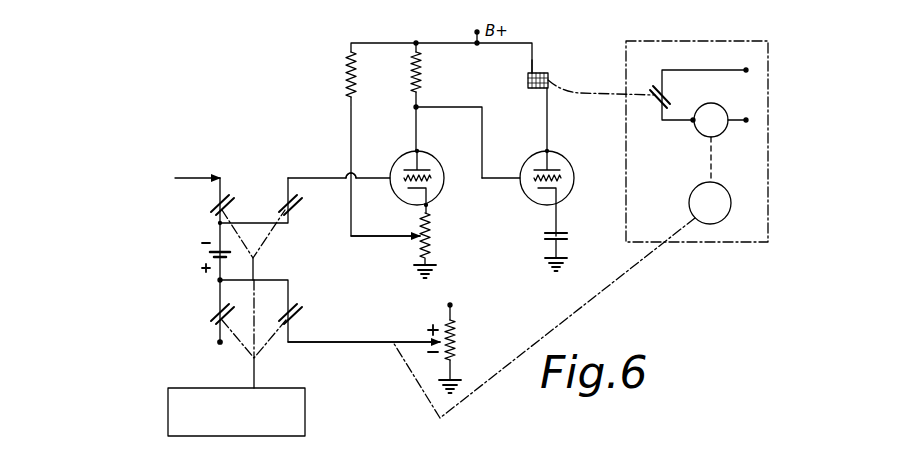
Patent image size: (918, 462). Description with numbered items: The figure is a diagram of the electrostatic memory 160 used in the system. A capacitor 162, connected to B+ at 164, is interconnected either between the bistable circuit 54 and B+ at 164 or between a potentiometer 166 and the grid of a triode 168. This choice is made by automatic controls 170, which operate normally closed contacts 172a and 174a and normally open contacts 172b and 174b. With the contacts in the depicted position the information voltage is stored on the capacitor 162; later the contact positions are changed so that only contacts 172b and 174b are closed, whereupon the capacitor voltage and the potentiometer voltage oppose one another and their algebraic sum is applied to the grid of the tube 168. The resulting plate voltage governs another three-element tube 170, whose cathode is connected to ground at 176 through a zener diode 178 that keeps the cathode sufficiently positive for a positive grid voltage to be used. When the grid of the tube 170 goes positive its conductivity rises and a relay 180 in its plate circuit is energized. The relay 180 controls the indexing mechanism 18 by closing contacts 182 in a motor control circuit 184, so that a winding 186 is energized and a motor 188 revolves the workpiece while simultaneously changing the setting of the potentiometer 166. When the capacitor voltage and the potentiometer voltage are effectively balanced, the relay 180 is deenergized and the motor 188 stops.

The bistable circuit 54 is at (126, 178).
The memory 160 is at (370, 43).
The capacitor 162 is at (210, 256).
The B+ connection 164 is at (218, 342).
The potentiometer 166 is at (452, 342).
The triode 168 is at (438, 186).
The automatic controls / three-element tube 170 is at (305, 392).
The normally closed contacts 172a is at (215, 197).
The normally open contacts 172b is at (292, 196).
The normally closed contacts 174a is at (215, 312).
The normally open contacts 174b is at (292, 312).
The ground 176 is at (567, 258).
The zener diode 178 is at (566, 236).
The relay 180 is at (548, 74).
The indexing mechanism 18 is at (770, 84).
The contacts 182 is at (676, 95).
The motor control circuit 184 is at (690, 68).
The winding 186 is at (718, 105).
The motor 188 is at (722, 188).